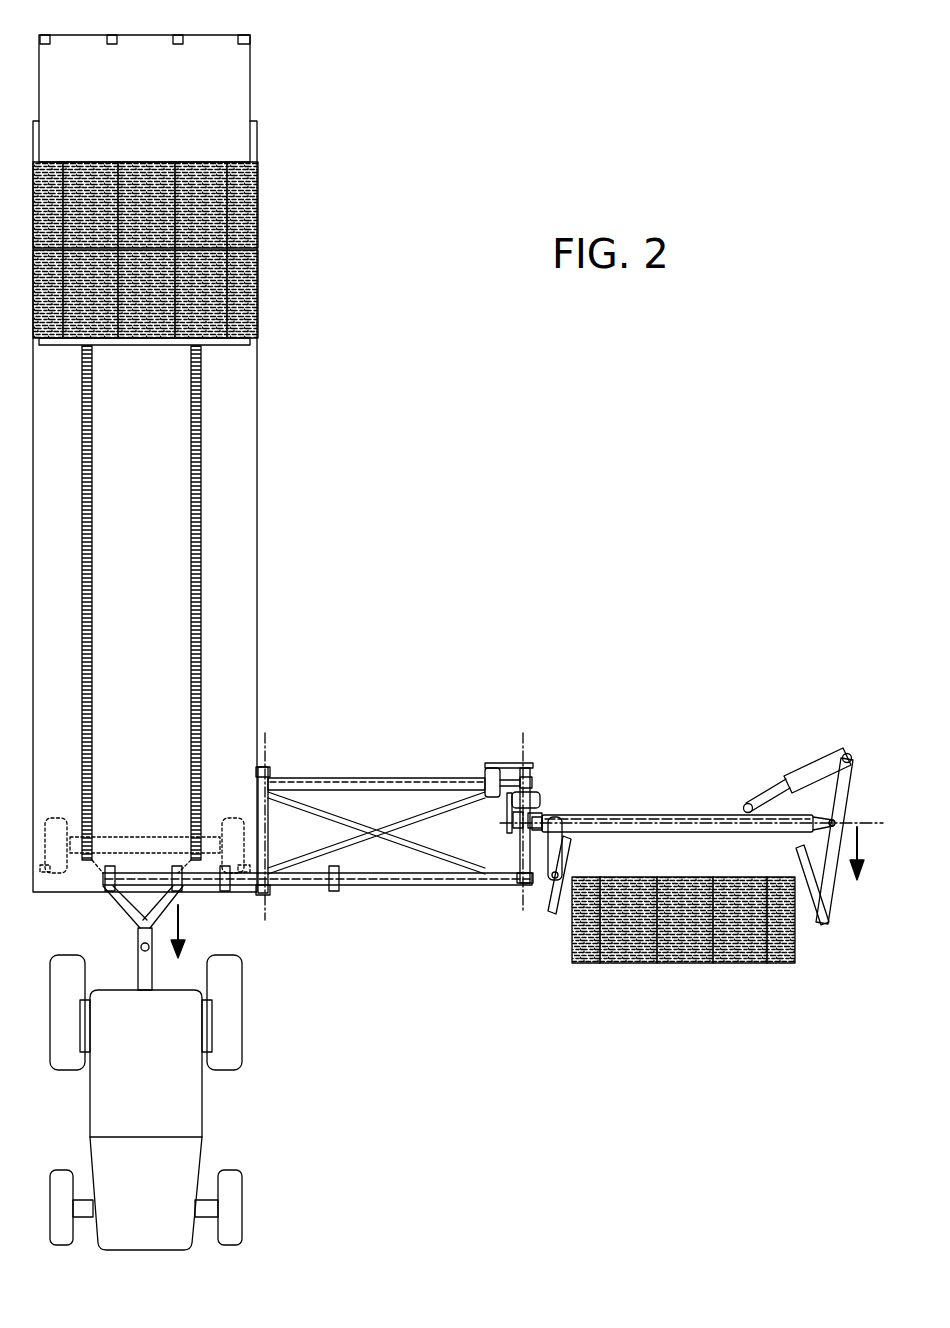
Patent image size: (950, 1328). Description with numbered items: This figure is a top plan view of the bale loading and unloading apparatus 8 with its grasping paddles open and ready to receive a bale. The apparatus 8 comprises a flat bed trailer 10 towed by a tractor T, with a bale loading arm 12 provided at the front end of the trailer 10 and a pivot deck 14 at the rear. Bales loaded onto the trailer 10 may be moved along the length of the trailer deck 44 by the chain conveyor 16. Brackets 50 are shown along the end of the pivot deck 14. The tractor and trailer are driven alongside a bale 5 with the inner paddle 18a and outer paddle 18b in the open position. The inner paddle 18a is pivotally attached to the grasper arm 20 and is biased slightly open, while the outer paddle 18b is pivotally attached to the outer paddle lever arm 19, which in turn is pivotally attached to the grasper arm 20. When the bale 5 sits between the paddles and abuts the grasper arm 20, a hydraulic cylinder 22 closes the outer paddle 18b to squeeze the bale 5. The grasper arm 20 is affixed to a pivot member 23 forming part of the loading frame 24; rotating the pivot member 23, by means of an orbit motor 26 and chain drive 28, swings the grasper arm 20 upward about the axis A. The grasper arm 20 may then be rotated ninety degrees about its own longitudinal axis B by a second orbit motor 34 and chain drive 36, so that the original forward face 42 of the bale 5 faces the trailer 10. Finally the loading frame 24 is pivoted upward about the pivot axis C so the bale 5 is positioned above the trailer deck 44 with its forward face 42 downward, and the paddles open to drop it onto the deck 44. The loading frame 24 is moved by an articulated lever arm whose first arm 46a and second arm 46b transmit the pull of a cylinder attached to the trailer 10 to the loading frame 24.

The bale 5 is at (683, 945).
The apparatus 8 is at (477, 623).
The flat bed trailer 10 is at (245, 500).
The bale loading arm 12 is at (405, 778).
The pivot deck 14 is at (170, 100).
The chain conveyor 16 is at (90, 455).
The inner paddle 18a is at (559, 900).
The outer paddle 18b is at (818, 920).
The outer paddle lever arm 19 is at (826, 858).
The grasper arm 20 is at (673, 820).
The hydraulic cylinder 22 is at (792, 782).
The pivot member 23 is at (520, 862).
The loading frame 24 is at (382, 786).
The orbit motor 26 is at (487, 782).
The chain drive 28 is at (518, 765).
The orbit motor 34 is at (541, 800).
The chain drive 36 is at (507, 812).
The original forward face 42 is at (718, 953).
The trailer deck 44 is at (245, 600).
The first arm 46a is at (200, 880).
The second arm 46b is at (292, 880).
The tie-down brackets 50 is at (243, 36).
The axis A is at (523, 745).
The longitudinal axis B is at (855, 820).
The pivot axis C is at (265, 745).
The tractor T is at (203, 1088).